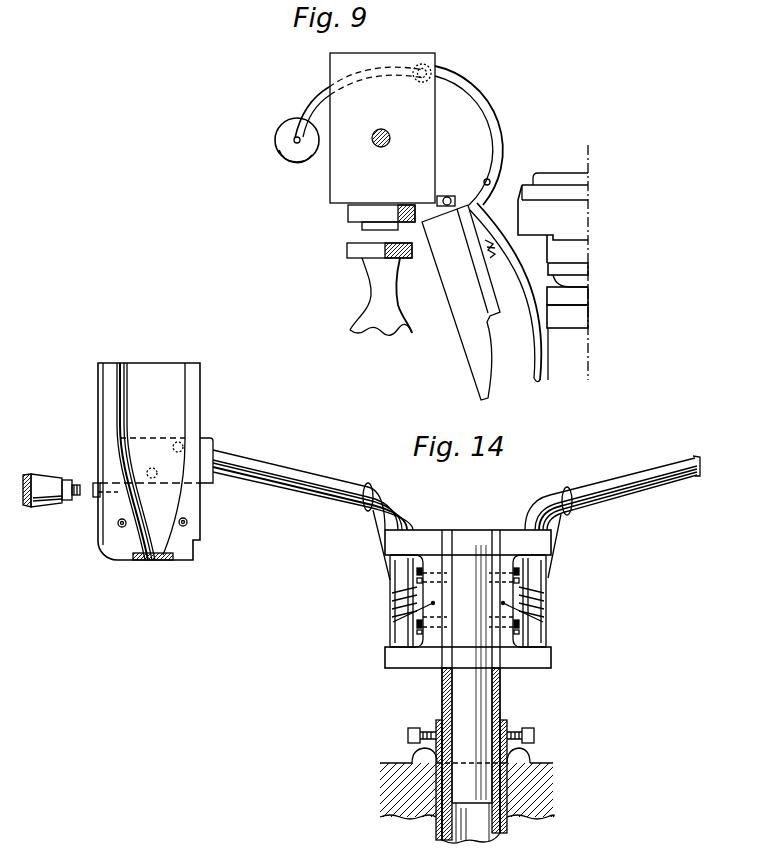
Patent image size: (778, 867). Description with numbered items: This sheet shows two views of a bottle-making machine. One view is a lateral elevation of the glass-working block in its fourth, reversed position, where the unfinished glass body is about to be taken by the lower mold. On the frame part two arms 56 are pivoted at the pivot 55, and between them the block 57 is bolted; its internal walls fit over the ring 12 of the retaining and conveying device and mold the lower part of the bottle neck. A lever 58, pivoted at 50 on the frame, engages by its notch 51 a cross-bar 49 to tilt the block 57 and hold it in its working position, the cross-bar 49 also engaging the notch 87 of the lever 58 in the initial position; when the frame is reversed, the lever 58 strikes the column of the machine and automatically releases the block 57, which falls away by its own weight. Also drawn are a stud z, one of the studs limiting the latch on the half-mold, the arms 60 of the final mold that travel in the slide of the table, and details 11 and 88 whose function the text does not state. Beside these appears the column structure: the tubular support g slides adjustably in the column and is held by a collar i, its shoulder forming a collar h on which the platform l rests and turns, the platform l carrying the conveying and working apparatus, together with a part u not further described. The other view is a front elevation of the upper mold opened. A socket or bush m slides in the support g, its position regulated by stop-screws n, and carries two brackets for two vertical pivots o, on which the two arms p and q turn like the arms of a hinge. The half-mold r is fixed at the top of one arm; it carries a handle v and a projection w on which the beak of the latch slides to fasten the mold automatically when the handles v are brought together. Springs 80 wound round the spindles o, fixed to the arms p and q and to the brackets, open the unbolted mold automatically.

In FIG. 9, the stud z is at (383, 125).
In FIG. 9, the pivot 55 is at (425, 64).
In FIG. 9, the arms 56 is at (497, 128).
In FIG. 9, the cross-bar 49 is at (485, 180).
In FIG. 9, the pivot 50 is at (456, 188).
In FIG. 9, the notch 51 is at (473, 204).
In FIG. 9, the block 11 is at (354, 213).
In FIG. 9, the ring 12 is at (361, 228).
In FIG. 9, the arms 60 is at (372, 298).
In FIG. 9, the block 57 is at (461, 302).
In FIG. 9, the lever 58 is at (537, 330).
In FIG. 9, the notch 87 is at (479, 210).
In FIG. 9, the catch 88 is at (502, 265).
In FIG. 9, the platform l is at (553, 218).
In FIG. 9, the collar h is at (578, 273).
In FIG. 9, the collar i is at (566, 297).
In FIG. 9, the stem u is at (559, 354).
In FIG. 14, the half-mold r is at (153, 461).
In FIG. 14, the handle v is at (43, 499).
In FIG. 14, the projection w is at (78, 497).
In FIG. 14, the arm p is at (258, 468).
In FIG. 14, the arm q is at (620, 478).
In FIG. 14, the springs 80 is at (377, 531).
In FIG. 14, the vertical pivots o is at (402, 623).
In FIG. 14, the socket or bush m is at (460, 680).
In FIG. 14, the stop-screws n is at (406, 737).
In FIG. 14, the tubular support g is at (480, 820).